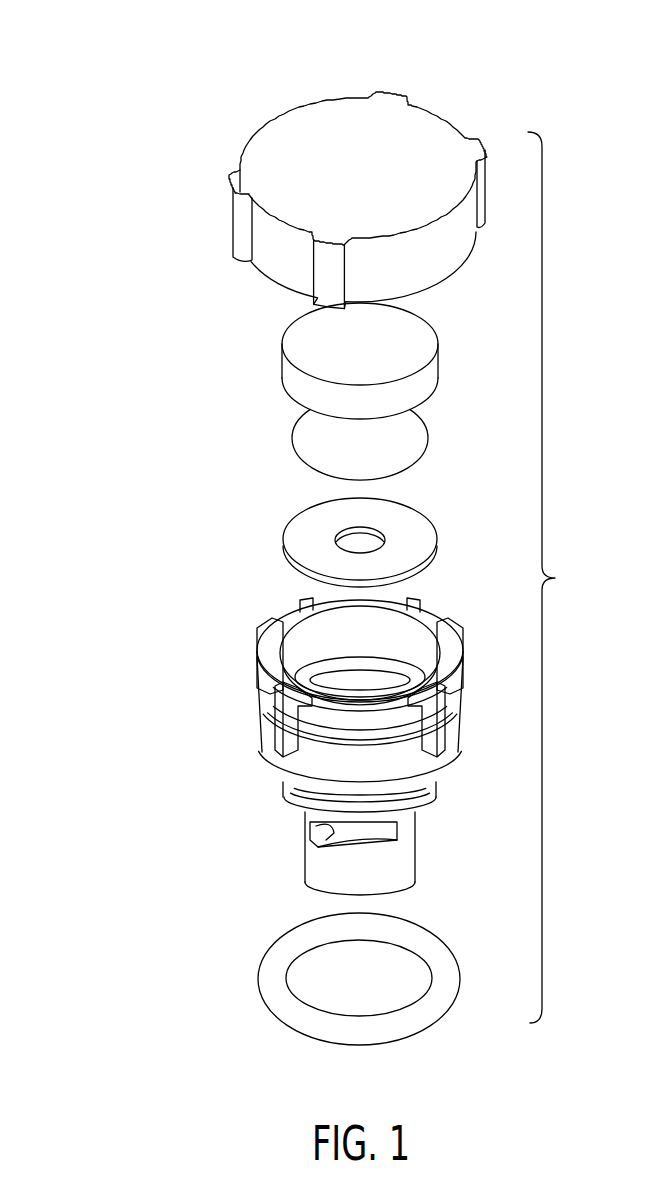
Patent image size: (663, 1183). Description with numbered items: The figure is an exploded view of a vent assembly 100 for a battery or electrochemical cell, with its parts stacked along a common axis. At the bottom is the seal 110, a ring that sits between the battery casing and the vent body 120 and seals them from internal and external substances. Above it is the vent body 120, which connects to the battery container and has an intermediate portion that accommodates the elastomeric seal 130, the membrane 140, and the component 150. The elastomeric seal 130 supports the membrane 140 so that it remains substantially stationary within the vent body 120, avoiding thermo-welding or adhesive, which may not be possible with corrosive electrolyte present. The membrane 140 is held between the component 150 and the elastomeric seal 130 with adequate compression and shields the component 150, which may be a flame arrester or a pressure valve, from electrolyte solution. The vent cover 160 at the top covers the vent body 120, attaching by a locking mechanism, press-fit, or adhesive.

The vent assembly 100 is at (83, 91).
The seal 110 is at (241, 968).
The vent body 120 is at (248, 747).
The elastomeric seal 130 is at (265, 539).
The membrane 140 is at (270, 427).
The component 150 is at (262, 330).
The vent cover 160 is at (241, 127).